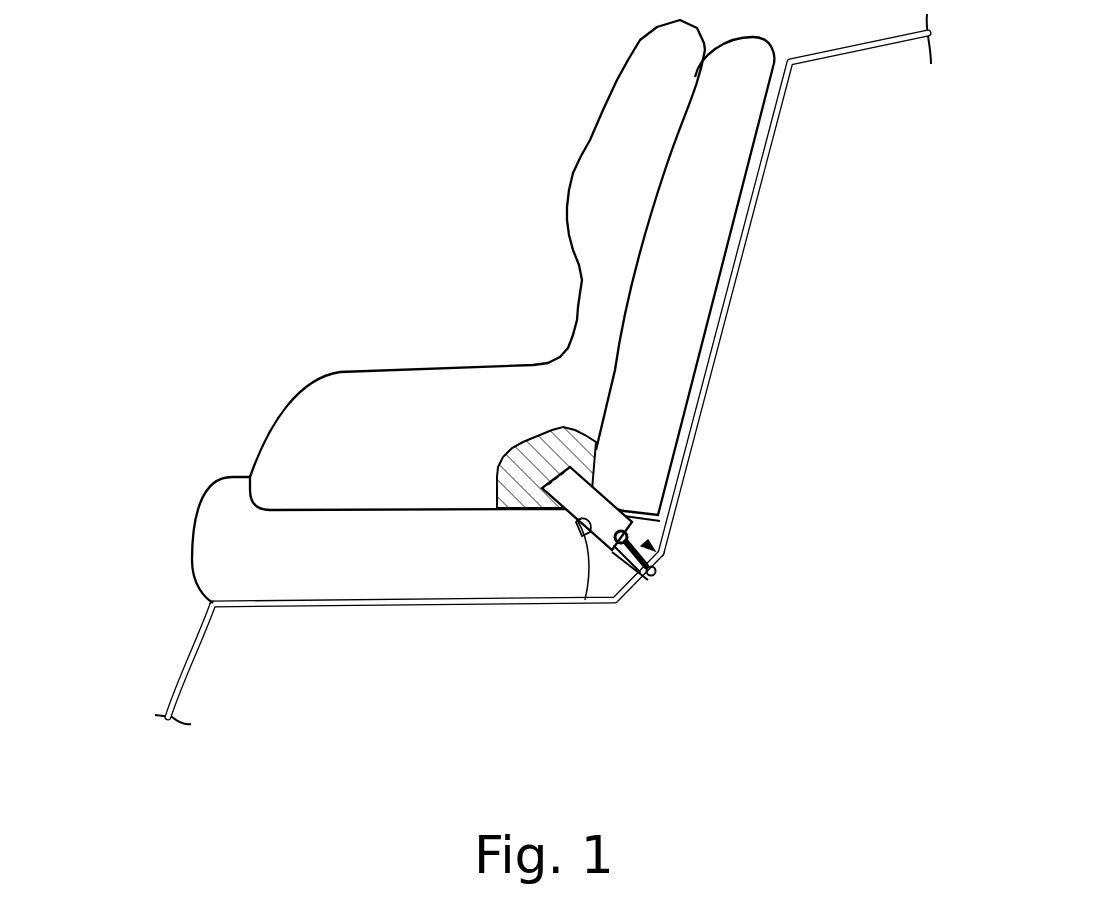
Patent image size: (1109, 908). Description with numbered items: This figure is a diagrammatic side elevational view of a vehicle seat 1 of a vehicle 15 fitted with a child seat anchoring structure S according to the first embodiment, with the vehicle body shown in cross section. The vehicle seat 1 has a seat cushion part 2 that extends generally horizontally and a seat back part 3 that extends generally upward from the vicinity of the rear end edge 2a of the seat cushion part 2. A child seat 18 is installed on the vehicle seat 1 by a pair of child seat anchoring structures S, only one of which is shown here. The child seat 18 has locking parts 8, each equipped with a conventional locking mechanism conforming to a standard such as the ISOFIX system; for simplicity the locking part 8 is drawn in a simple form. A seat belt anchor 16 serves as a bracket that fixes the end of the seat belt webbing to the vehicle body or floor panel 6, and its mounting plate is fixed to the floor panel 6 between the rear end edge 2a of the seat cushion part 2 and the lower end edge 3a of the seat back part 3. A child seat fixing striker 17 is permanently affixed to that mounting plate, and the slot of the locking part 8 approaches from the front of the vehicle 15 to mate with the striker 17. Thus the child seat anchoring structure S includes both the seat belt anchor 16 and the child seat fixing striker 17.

The vehicle seat 1 is at (452, 187).
The seat cushion part 2 is at (395, 543).
The rear end edge 2a is at (592, 518).
The seat back part 3 is at (647, 327).
The lower end edge 3a is at (652, 518).
The floor panel 6 is at (575, 604).
The locking part 8 is at (547, 513).
The vehicle 15 is at (173, 654).
The seat belt anchor 16 is at (633, 583).
The child seat fixing striker 17 is at (667, 533).
The child seat 18 is at (475, 368).
The child seat anchoring structure S is at (667, 584).